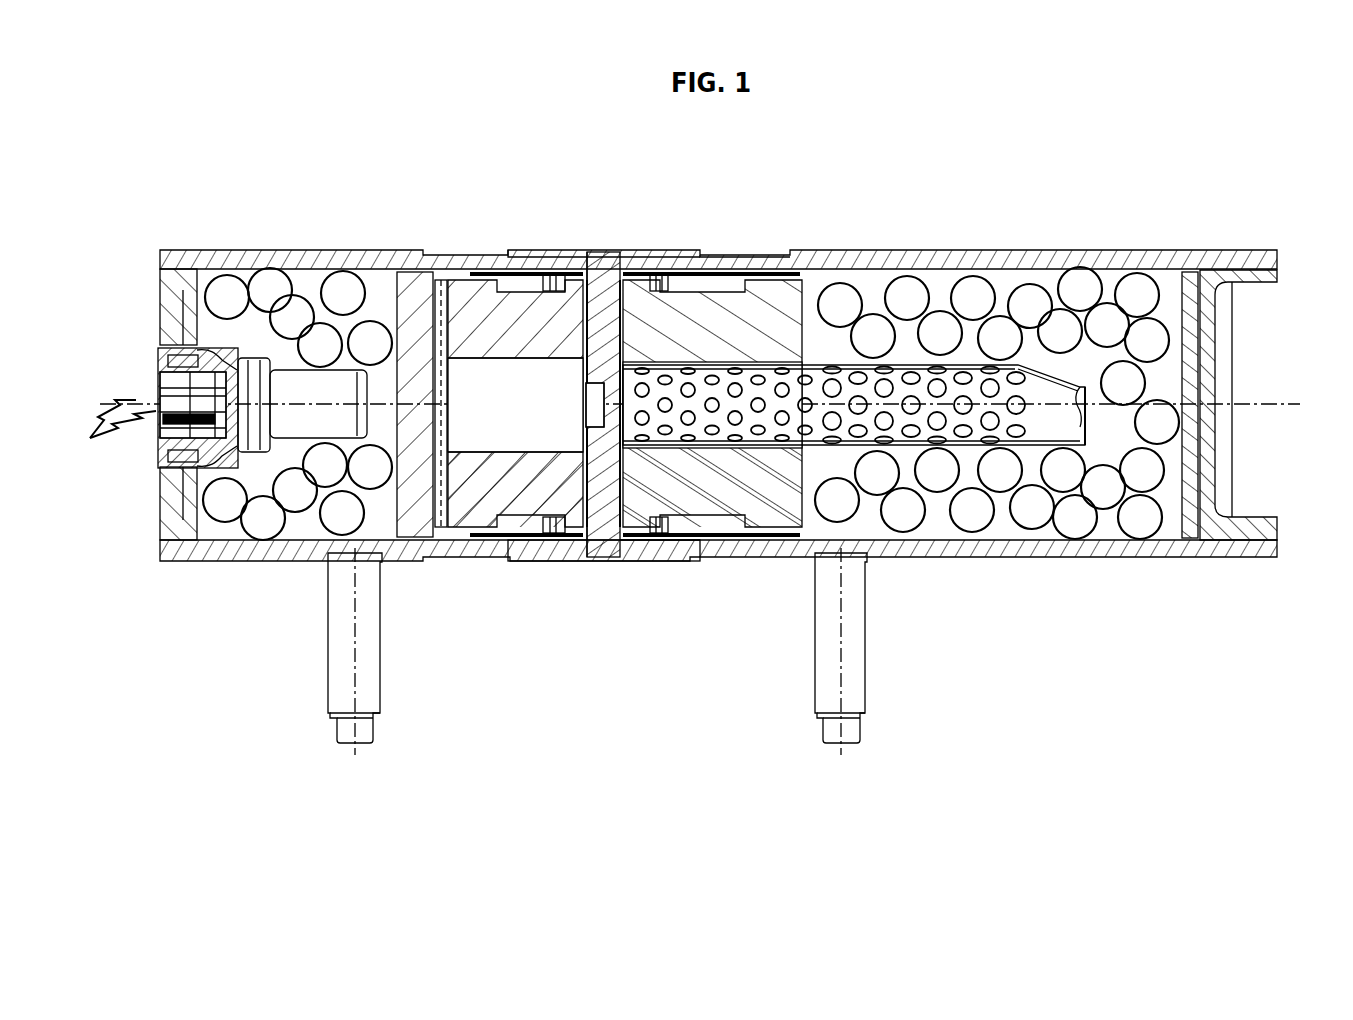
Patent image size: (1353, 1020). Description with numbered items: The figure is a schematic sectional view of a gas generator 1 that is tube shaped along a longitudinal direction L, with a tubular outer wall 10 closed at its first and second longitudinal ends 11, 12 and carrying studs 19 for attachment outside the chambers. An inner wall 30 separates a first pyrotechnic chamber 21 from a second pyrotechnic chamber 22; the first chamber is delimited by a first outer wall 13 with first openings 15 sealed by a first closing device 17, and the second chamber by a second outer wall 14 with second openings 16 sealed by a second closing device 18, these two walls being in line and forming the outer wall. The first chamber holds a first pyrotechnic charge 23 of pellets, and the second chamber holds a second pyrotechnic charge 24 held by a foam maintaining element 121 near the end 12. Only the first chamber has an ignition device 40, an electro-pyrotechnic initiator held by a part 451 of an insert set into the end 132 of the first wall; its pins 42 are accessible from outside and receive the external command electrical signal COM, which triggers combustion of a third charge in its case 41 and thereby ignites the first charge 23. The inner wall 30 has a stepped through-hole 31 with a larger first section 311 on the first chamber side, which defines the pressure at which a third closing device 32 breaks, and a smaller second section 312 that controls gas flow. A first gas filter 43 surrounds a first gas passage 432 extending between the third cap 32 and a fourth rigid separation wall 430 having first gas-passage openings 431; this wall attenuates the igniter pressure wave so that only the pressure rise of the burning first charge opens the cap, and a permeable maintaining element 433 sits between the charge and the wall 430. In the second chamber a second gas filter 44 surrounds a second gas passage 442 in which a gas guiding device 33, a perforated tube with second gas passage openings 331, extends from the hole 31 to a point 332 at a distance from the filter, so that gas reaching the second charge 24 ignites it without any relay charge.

The gas generator 1 is at (932, 176).
The outer wall 10 is at (320, 262).
The first longitudinal end 11 is at (178, 291).
The second longitudinal end 12 is at (1244, 270).
The element for maintaining second pyrotechnic charge 121 is at (1192, 300).
The end of first wall 132 is at (203, 261).
The first outer wall 13 is at (515, 550).
The second outer wall 14 is at (689, 545).
The first openings 15 is at (521, 262).
The second openings 16 is at (665, 263).
The first closing device 17 is at (548, 282).
The second closing device 18 is at (658, 284).
The studs 19 is at (367, 666).
The first pyrotechnic chamber 21 is at (300, 528).
The second pyrotechnic chamber 22 is at (1010, 520).
The first pyrotechnic charge 23 is at (228, 297).
The second pyrotechnic charge 24 is at (1078, 293).
The inner wall 30 is at (604, 330).
The through-hole 31 is at (605, 520).
The first section 311 is at (589, 300).
The second section 312 is at (617, 290).
The third closing device 32 is at (590, 418).
The gas guiding device 33 is at (902, 365).
The second gas passage openings 331 is at (782, 392).
The point 332 is at (1087, 433).
The ignition device 40 is at (293, 446).
The case 41 is at (290, 418).
The pins 42 is at (185, 421).
The first gas filter 43 is at (485, 490).
The fourth rigid separation wall 430 is at (416, 300).
The first gas-passage openings 431 is at (462, 392).
The first gas passage 432 is at (473, 535).
The element for maintaining first pyrotechnic charge 433 is at (470, 273).
The second gas filter 44 is at (745, 510).
The second gas passage 442 is at (732, 455).
The part for holding igniter 451 is at (235, 366).
The external command electrical signal COM is at (100, 430).
The longitudinal direction L is at (1300, 430).